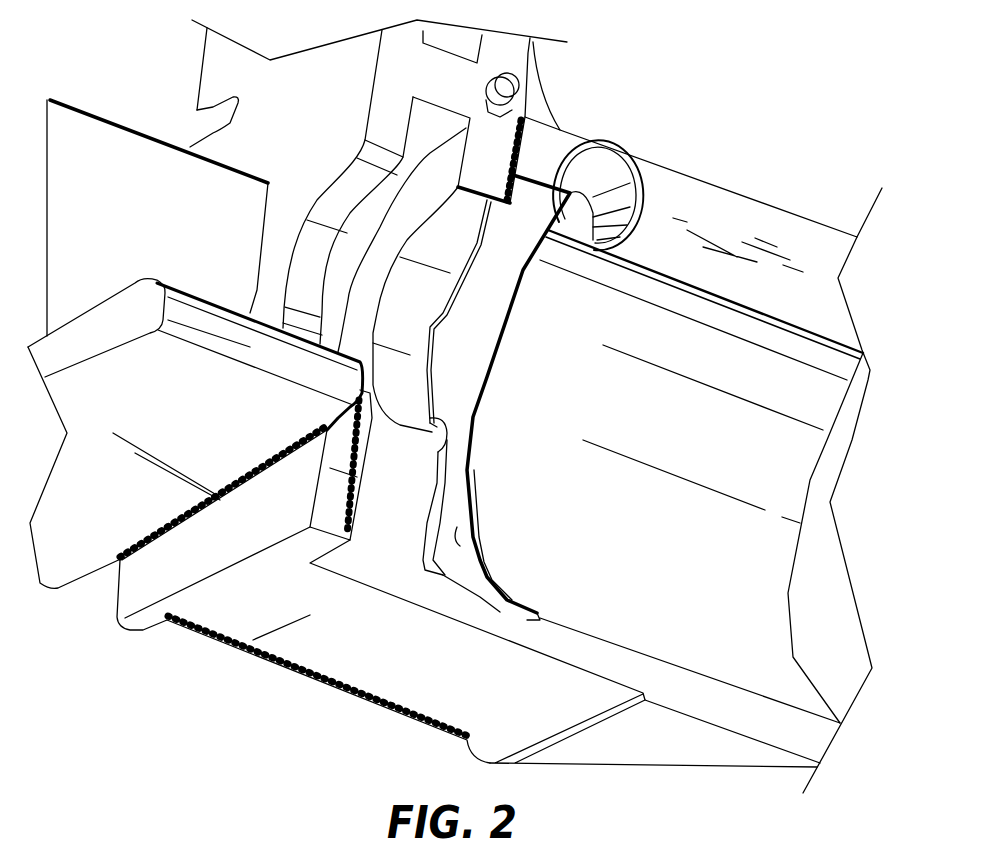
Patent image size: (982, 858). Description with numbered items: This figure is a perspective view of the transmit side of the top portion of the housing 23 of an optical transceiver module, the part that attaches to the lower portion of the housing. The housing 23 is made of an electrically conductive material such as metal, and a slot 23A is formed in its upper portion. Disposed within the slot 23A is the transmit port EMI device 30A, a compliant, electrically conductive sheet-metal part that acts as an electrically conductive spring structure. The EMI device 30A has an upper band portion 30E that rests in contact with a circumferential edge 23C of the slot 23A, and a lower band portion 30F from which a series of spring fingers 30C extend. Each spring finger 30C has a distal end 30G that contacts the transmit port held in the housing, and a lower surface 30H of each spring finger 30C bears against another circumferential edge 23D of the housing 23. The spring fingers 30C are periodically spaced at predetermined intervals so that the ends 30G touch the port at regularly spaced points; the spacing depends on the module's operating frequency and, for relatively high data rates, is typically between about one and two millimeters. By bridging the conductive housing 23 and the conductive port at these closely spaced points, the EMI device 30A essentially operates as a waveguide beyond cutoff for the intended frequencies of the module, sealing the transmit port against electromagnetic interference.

The module housing 23 is at (633, 740).
The slot 23A is at (473, 600).
The circumferential edge 23C is at (512, 607).
The circumferential edge 23D is at (432, 375).
The transmit port EMI device 30A is at (490, 240).
The spring fingers 30C is at (447, 497).
The upper band portion 30E is at (455, 540).
The lower band portion 30F is at (453, 315).
The distal end 30G is at (447, 417).
The lower surface 30H is at (447, 457).